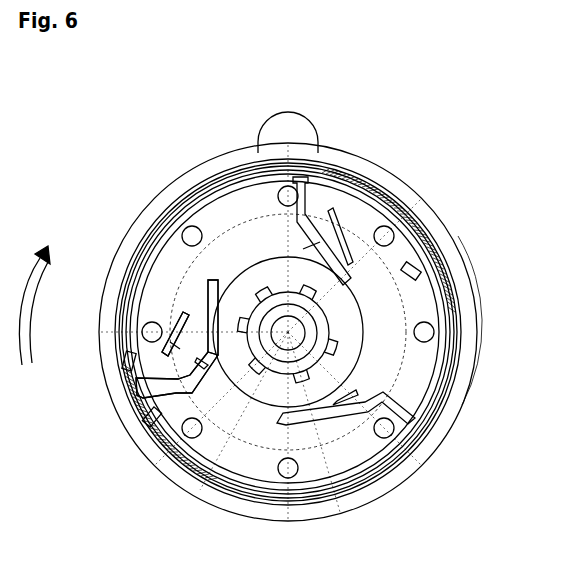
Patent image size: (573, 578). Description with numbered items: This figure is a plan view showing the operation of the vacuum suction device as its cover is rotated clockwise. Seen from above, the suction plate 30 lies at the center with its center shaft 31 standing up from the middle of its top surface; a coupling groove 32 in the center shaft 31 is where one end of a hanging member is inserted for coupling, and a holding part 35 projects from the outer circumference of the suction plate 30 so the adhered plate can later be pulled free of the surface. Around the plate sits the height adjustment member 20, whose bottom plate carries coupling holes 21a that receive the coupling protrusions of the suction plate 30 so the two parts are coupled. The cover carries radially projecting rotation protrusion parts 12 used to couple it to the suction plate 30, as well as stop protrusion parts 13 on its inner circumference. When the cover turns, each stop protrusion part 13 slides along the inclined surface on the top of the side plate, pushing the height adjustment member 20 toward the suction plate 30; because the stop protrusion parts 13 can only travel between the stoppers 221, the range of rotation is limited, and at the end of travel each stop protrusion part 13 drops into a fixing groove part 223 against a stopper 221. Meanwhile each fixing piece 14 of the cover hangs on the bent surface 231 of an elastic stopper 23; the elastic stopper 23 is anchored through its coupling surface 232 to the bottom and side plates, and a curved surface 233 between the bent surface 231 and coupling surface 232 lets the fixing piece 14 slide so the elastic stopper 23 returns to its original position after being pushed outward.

The rotation protrusion part 12 is at (160, 430).
The stop protrusion part 13 is at (318, 150).
The fixing piece 14 is at (440, 288).
The height adjustment member 20 is at (130, 280).
The coupling hole 21a is at (182, 192).
The elastic stopper 23 is at (176, 318).
The suction plate 30 is at (237, 516).
The center shaft 31 is at (340, 515).
The coupling groove 32 is at (372, 490).
The holding part 35 is at (280, 116).
The stopper 221 is at (284, 152).
The fixing groove part 223 is at (258, 150).
The bent surface 231 is at (186, 306).
The coupling surface 232 is at (336, 216).
The curved surface 233 is at (173, 355).